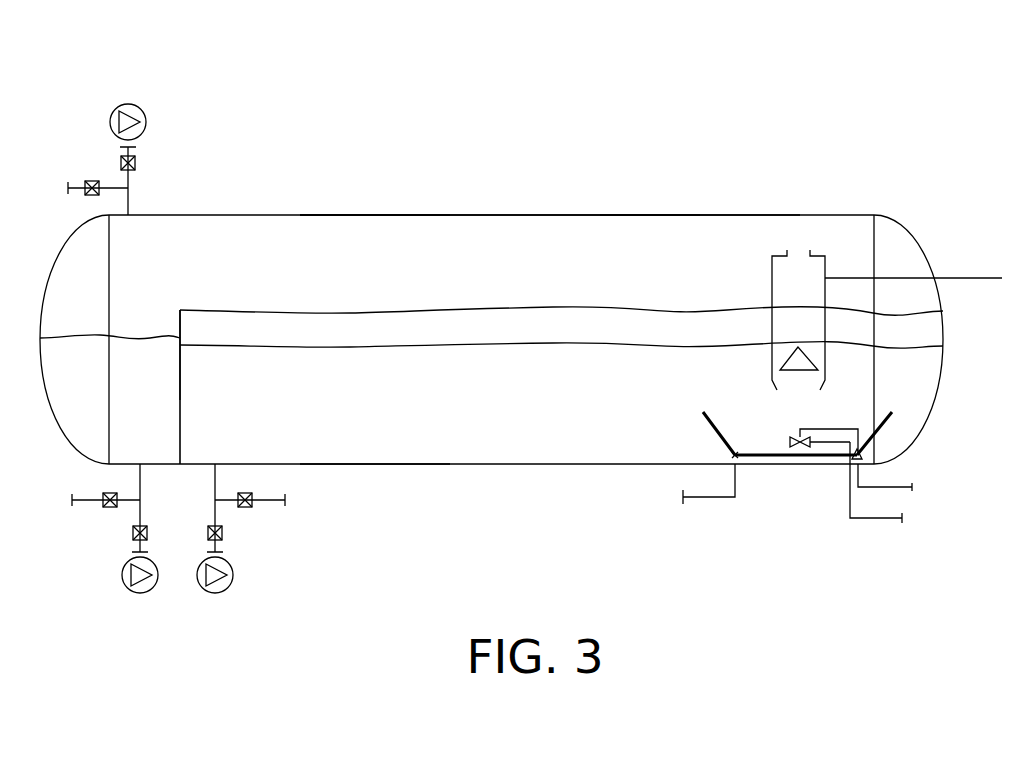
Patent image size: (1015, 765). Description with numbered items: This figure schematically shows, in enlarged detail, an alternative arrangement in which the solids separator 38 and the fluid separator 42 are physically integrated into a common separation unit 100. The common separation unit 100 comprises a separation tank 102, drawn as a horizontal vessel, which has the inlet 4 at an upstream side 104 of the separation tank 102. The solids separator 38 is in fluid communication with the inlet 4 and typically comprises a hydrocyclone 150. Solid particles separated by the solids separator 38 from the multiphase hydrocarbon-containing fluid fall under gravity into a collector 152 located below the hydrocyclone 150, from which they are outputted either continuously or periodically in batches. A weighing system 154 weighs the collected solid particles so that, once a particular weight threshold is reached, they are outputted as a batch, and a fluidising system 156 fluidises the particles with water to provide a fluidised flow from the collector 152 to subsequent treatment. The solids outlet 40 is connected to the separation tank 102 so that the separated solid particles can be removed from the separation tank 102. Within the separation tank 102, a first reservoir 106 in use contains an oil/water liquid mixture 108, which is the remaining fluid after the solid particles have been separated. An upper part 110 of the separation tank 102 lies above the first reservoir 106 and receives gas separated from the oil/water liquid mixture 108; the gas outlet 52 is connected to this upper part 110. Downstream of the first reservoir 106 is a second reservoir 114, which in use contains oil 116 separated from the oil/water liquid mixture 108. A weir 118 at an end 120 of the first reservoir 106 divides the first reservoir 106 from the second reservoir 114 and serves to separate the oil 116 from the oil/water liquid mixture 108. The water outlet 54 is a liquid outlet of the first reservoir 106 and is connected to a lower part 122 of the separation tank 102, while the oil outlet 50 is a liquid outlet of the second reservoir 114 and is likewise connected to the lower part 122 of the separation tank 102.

The common separation unit 100 is at (457, 216).
The separation tank 102 is at (557, 226).
The fluid separator 42 is at (645, 220).
The upstream side 104 is at (742, 216).
The upper part 110 is at (373, 265).
The lower part 122 is at (377, 443).
The end 120 is at (205, 365).
The weir 118 is at (178, 363).
The second reservoir 114 is at (138, 375).
The oil 116 is at (160, 414).
The first reservoir 106 is at (418, 362).
The oil/water liquid mixture 108 is at (530, 422).
The solids separator 38 is at (822, 258).
The inlet 4 is at (962, 278).
The hydrocyclone 150 is at (780, 362).
The collector 152 is at (725, 438).
The weighing system 154 is at (732, 454).
The fluidising system 156 is at (802, 447).
The solids outlet 40 is at (873, 520).
The gas outlet 52 is at (127, 104).
The oil outlet 50 is at (140, 593).
The water outlet 54 is at (215, 593).